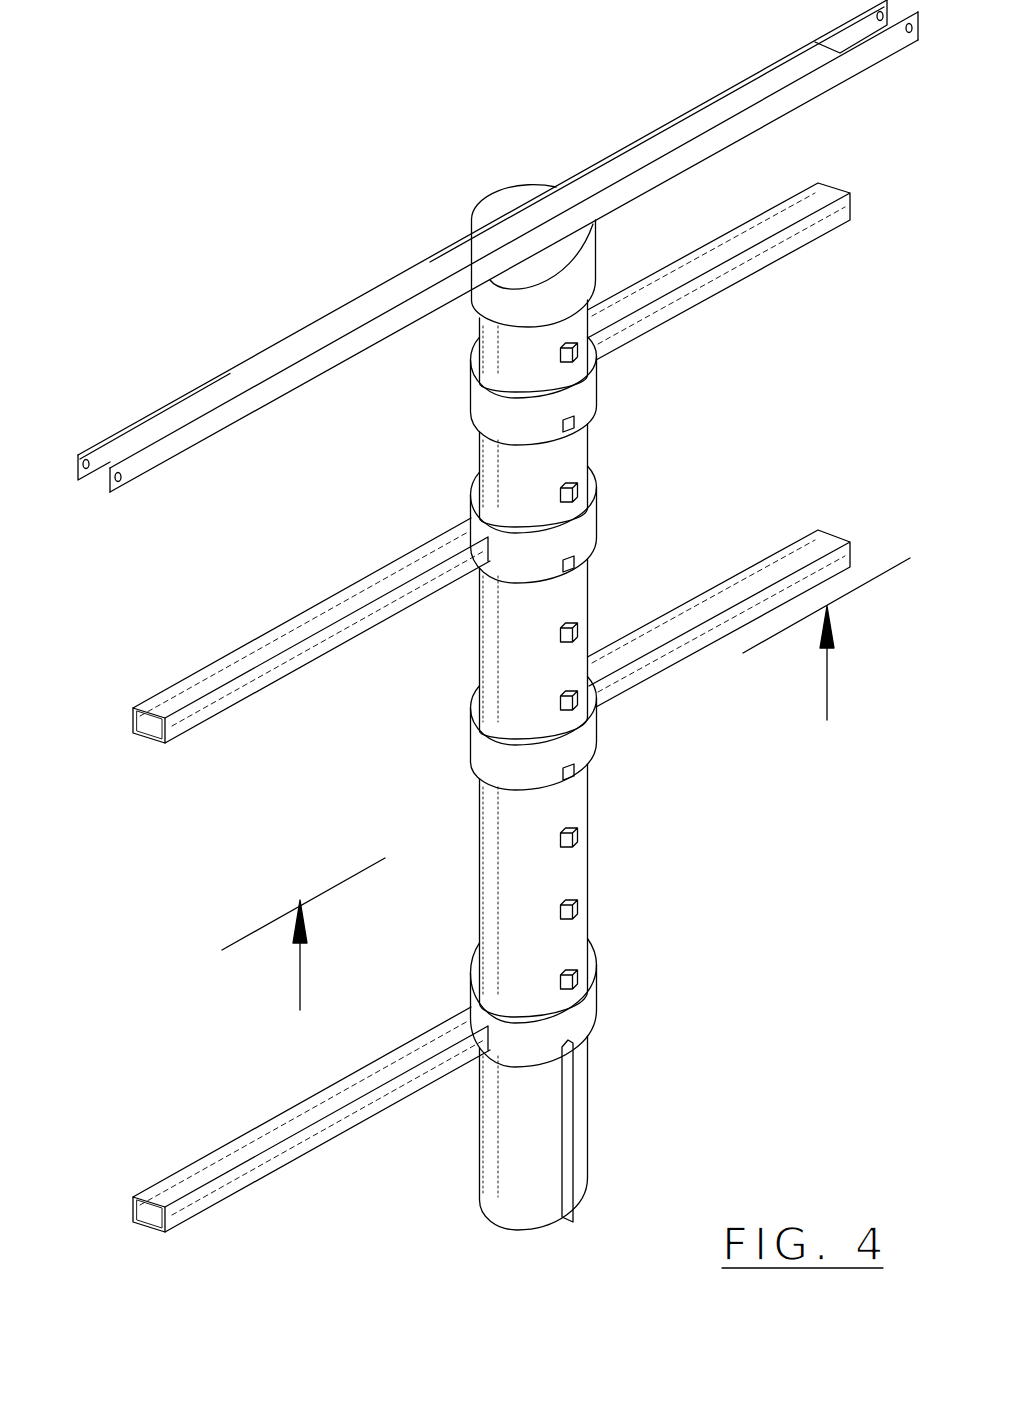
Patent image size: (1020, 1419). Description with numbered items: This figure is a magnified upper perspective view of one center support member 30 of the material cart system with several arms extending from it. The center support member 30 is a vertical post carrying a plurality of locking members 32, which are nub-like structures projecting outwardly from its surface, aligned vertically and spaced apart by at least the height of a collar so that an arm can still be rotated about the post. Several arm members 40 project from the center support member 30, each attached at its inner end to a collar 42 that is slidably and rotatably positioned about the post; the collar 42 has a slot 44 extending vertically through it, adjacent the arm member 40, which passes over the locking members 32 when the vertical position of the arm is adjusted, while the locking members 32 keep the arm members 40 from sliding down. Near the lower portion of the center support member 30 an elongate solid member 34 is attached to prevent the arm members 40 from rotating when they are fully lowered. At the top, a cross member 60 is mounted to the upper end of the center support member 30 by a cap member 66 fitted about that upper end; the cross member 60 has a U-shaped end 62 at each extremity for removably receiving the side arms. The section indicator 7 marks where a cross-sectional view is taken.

The section line 7- 7 is at (566, 811).
The center support member 30 is at (553, 946).
The locking member 32 is at (570, 480).
The elongate solid member 34 is at (572, 1145).
The arm member 40 is at (300, 614).
The collar 42 is at (500, 765).
The slot 44 is at (483, 522).
The cross member 60 is at (400, 292).
The U-shaped end 62 is at (112, 452).
The cap member 66 is at (517, 193).